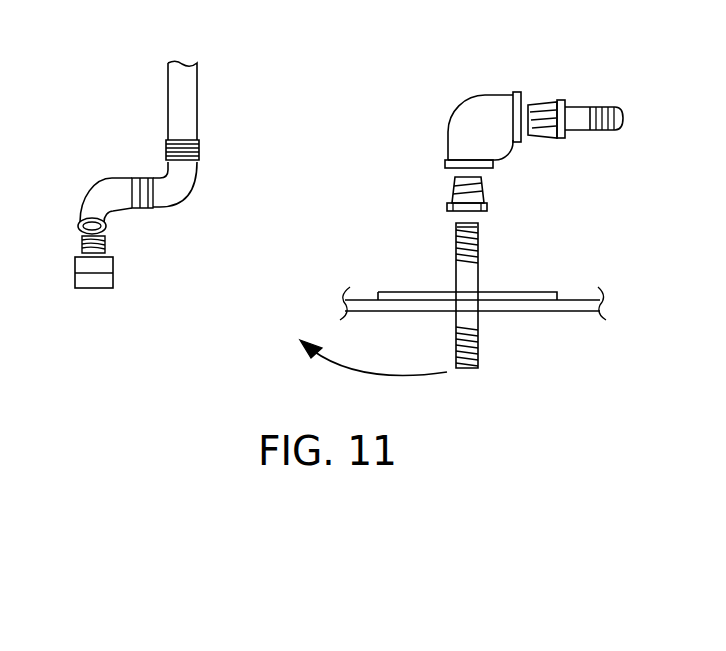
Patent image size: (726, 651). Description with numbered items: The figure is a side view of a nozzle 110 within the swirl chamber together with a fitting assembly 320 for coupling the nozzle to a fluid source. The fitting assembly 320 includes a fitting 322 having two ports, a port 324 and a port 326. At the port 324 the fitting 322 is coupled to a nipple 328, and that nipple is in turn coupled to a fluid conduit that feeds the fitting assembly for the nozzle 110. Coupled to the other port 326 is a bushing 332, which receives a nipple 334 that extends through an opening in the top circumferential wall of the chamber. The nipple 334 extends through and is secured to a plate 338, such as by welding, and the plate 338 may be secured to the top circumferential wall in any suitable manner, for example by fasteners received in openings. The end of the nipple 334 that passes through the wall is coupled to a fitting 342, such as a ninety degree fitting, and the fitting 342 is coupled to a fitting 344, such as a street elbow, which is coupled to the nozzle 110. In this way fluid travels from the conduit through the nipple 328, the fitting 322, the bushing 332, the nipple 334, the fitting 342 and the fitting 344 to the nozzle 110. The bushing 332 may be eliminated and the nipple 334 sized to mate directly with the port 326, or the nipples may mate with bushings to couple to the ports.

The nozzle 110 is at (92, 282).
The fitting assembly 320 is at (595, 187).
The fitting 322 is at (478, 118).
The port 324 is at (520, 102).
The port 326 is at (452, 167).
The nipple 328 is at (590, 108).
The bushing 332 is at (483, 193).
The nipple 334 is at (193, 110).
The plate 338 is at (423, 294).
The fitting 342 is at (190, 180).
The fitting 344 is at (110, 188).